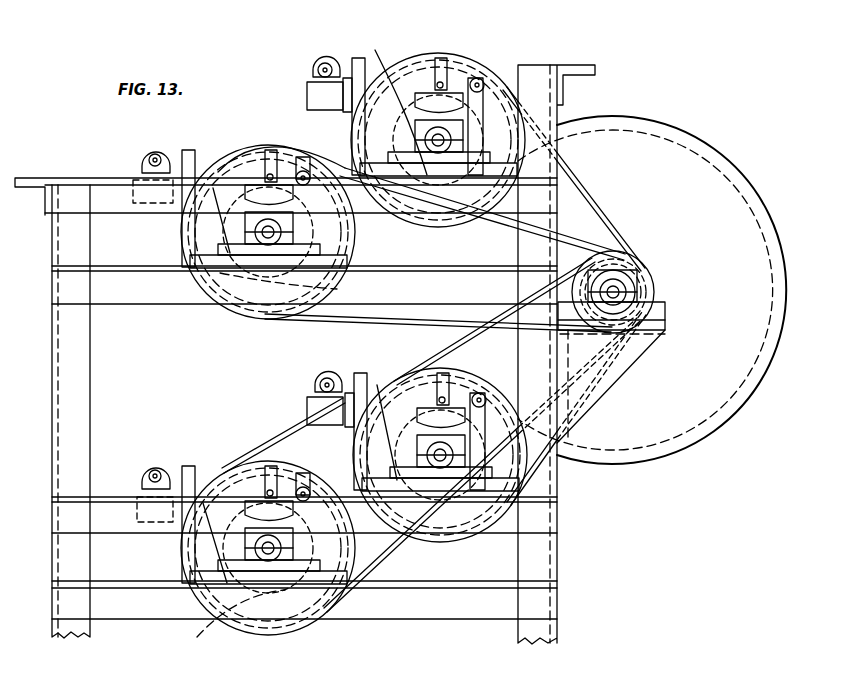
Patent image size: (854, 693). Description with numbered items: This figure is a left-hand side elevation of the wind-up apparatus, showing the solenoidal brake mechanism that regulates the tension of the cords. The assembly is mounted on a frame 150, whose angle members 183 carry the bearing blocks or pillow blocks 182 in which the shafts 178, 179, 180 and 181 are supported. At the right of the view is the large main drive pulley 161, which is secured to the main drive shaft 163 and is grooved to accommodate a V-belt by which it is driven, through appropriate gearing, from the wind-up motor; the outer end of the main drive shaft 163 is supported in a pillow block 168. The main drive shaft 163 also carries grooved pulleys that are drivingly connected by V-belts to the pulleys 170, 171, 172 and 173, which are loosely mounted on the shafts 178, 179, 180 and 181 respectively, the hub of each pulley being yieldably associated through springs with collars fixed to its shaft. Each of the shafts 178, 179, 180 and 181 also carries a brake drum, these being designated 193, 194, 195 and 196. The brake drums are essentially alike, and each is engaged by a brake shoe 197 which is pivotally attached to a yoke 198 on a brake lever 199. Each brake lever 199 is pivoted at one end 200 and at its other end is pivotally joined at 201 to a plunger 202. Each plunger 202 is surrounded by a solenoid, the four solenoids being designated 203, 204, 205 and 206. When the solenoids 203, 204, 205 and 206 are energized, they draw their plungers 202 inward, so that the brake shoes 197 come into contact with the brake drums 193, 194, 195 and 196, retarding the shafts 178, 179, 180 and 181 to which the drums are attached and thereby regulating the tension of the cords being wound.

The frame 150 is at (67, 177).
The main drive pulley 161 is at (735, 158).
The main drive shaft 163 is at (615, 288).
The pillow block 168 is at (641, 278).
The pulley 170 is at (497, 80).
The pulley 171 is at (472, 537).
The pulley 172 is at (263, 143).
The pulley 173 is at (250, 634).
The shaft 178 is at (417, 125).
The shaft 179 is at (441, 468).
The shaft 180 is at (267, 238).
The shaft 181 is at (271, 553).
The pillow blocks 182 is at (459, 118).
The angle members 183 is at (125, 213).
The brake drum 193 is at (376, 52).
The brake drum 194 is at (358, 441).
The brake drum 195 is at (340, 289).
The brake drum 196 is at (210, 630).
The brake shoe 197 is at (252, 170).
The yoke 198 is at (437, 378).
The brake lever 199 is at (342, 378).
The pivot end 200 is at (481, 393).
The pivotal joint 201 is at (325, 378).
The plunger 202 is at (302, 392).
The solenoid 203 is at (320, 105).
The solenoid 204 is at (307, 405).
The solenoid 205 is at (135, 178).
The solenoid 206 is at (137, 497).